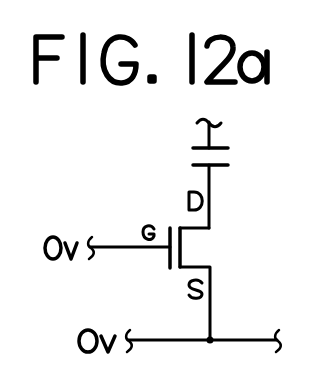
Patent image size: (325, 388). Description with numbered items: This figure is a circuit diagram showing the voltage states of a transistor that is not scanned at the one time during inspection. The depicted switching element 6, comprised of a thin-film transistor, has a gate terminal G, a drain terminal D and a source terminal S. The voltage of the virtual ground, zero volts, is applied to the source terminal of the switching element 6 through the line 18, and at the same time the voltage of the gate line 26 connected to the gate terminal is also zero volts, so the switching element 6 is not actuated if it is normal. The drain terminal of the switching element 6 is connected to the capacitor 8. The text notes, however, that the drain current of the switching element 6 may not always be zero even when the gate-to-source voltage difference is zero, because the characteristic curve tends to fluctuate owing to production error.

The capacitor 8 is at (280, 157).
The switching element 6 is at (197, 243).
The gate line 26 is at (116, 245).
The source line 18 is at (255, 338).